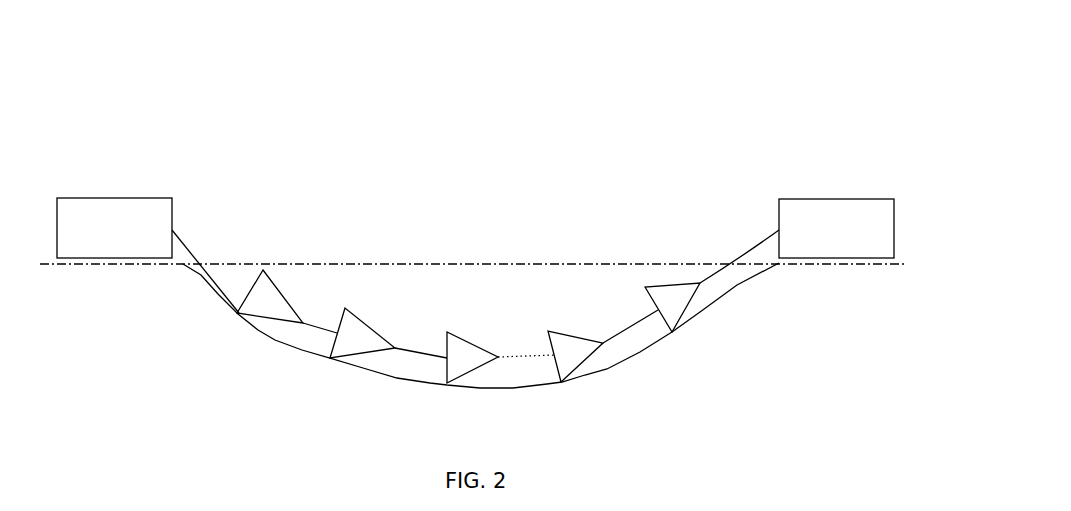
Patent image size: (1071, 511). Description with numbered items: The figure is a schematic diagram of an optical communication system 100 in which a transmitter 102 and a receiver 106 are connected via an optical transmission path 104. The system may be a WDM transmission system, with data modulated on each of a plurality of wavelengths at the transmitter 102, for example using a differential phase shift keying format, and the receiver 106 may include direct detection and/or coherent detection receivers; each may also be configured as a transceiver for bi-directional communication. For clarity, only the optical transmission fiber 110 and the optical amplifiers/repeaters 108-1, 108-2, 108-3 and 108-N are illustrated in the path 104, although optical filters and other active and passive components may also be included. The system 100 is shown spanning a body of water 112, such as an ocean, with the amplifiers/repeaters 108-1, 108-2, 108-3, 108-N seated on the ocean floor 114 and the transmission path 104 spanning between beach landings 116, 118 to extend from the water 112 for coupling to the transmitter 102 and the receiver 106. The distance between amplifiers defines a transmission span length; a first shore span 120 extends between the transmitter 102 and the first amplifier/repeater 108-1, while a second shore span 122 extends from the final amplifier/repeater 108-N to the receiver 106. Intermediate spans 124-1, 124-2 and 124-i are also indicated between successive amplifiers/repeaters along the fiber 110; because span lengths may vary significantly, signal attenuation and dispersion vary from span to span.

The optical communication system 100 is at (502, 105).
The transmitter 102 is at (113, 198).
The optical transmission path 104 is at (468, 298).
The receiver 106 is at (837, 199).
The optical amplifier/repeater 108-1 is at (260, 318).
The optical amplifier/repeater 108-2 is at (360, 355).
The optical amplifier/repeater 108-3 is at (473, 372).
The optical amplifier/repeater 108-N is at (688, 306).
The optical transmission fiber 110 is at (318, 327).
The body of water 112 is at (355, 254).
The ocean floor 114 is at (537, 388).
The beach landing 116 is at (177, 275).
The beach landing 118 is at (787, 275).
The first shore span 120 is at (210, 262).
The second shore span 122 is at (742, 258).
The signal path between amplifiers 124-1 is at (302, 336).
The signal path between amplifiers 124-2 is at (417, 362).
The signal path between amplifiers 124-i is at (649, 327).